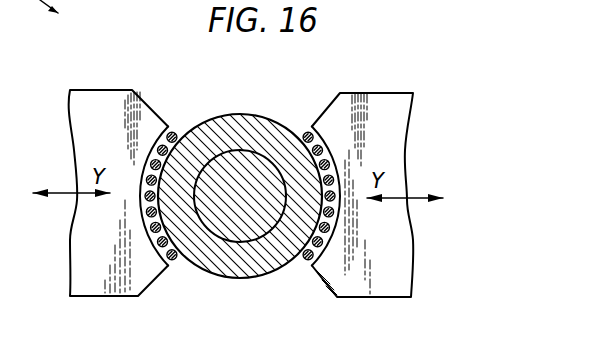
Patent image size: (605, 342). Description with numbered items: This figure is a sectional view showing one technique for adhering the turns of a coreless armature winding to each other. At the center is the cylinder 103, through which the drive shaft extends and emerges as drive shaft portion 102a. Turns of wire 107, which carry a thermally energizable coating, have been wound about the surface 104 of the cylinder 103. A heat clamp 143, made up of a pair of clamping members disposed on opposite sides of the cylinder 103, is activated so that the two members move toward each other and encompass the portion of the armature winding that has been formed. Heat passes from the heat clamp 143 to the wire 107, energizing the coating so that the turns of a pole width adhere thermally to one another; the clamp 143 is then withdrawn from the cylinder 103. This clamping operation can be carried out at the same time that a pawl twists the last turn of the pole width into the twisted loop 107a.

The heat clamp 143 is at (122, 98).
The wire 107 is at (180, 127).
The cylinder 103 is at (197, 253).
The drive shaft portion 102a is at (235, 233).
The surface 104 is at (283, 277).
The twisted loop 107a is at (22, 325).